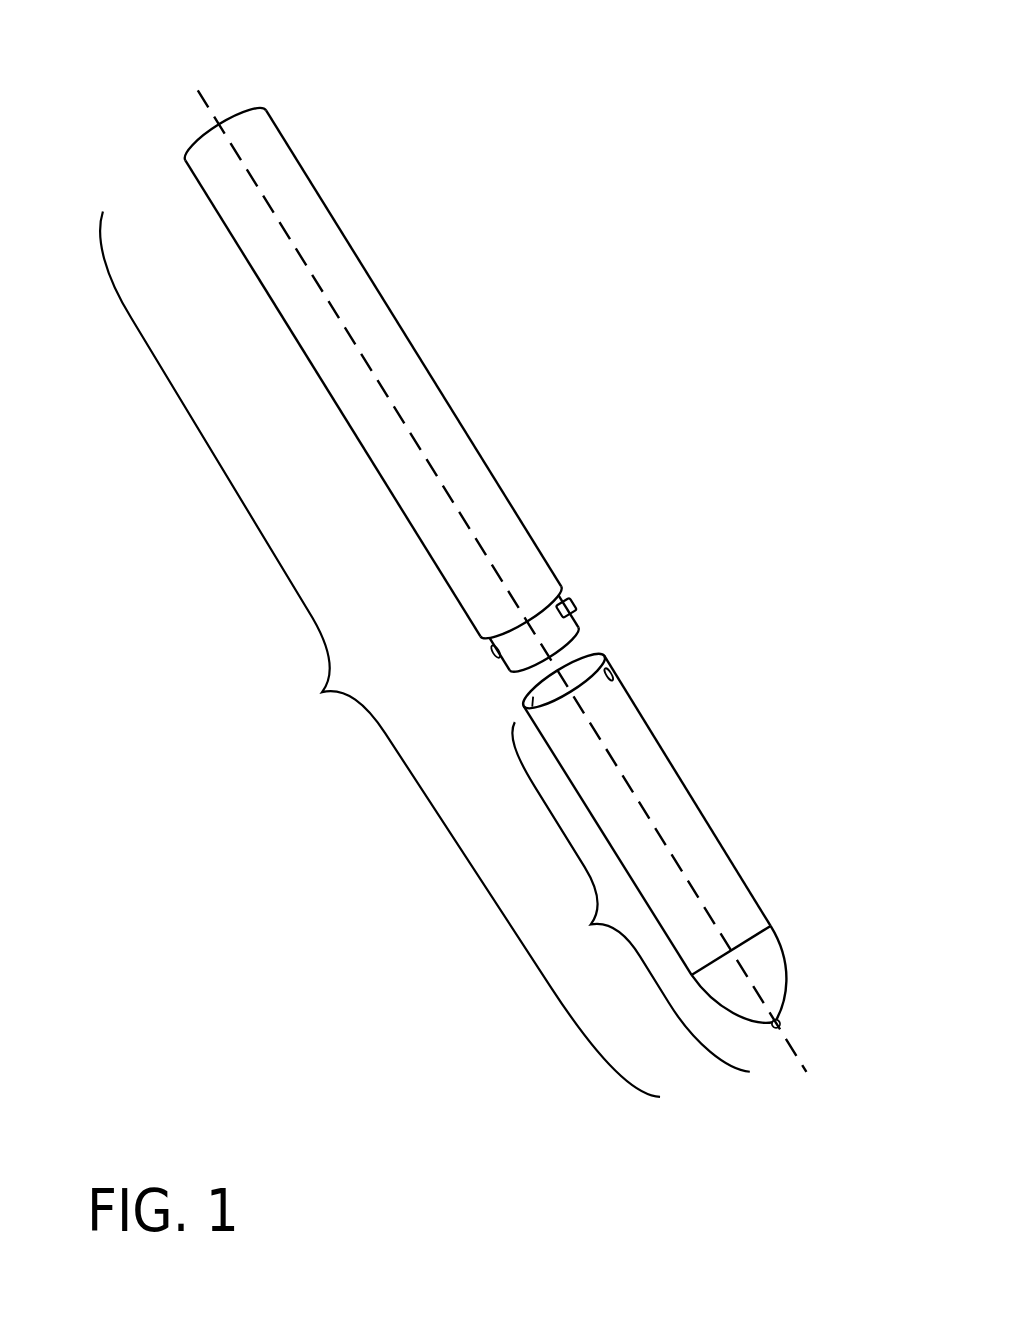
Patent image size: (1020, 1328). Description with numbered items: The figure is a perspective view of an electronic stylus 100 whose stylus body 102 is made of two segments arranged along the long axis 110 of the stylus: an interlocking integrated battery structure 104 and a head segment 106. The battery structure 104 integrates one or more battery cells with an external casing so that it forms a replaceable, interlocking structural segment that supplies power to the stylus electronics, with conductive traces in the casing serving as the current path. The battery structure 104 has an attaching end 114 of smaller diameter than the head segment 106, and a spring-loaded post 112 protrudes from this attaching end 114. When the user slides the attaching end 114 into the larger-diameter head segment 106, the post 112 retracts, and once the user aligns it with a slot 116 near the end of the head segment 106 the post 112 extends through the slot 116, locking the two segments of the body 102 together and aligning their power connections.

The electronic stylus 100 is at (146, 50).
The stylus body 102 is at (432, 617).
The interlocking integrated battery structure 104 is at (412, 342).
The head segment 106 is at (649, 866).
The long axis 110 is at (798, 1063).
The post 112 is at (576, 609).
The attaching end 114 is at (615, 630).
The slot 116 is at (614, 677).